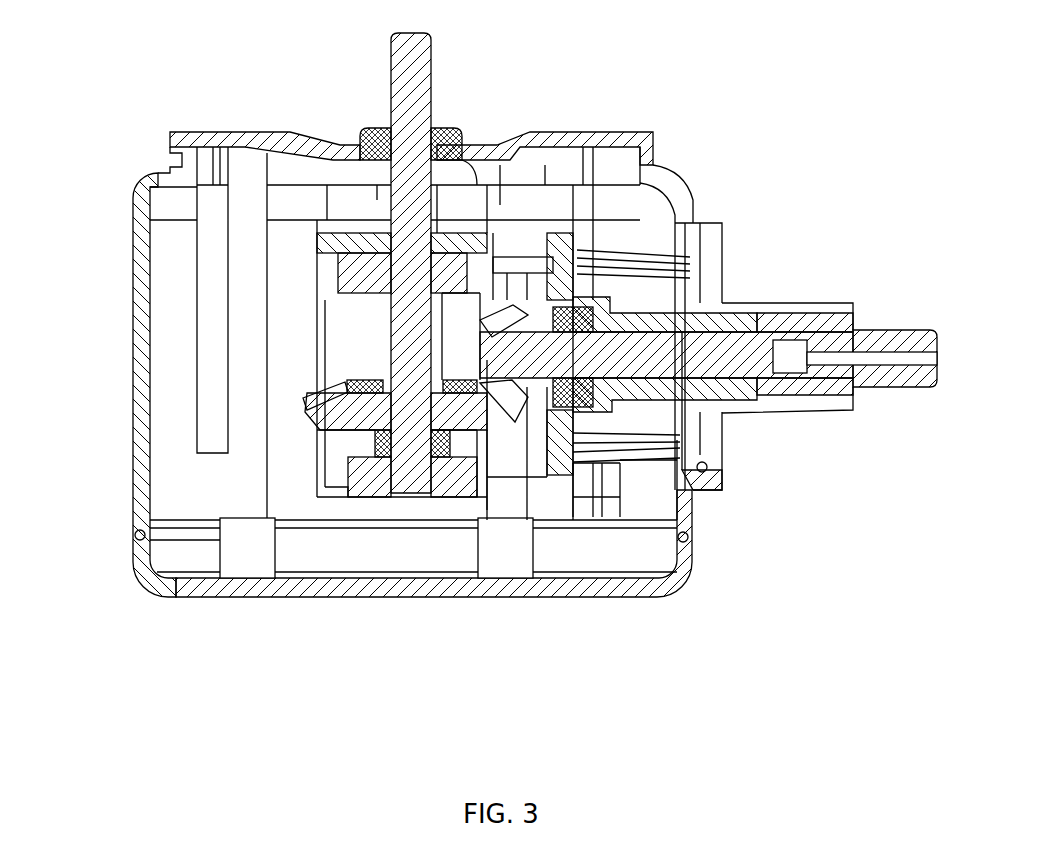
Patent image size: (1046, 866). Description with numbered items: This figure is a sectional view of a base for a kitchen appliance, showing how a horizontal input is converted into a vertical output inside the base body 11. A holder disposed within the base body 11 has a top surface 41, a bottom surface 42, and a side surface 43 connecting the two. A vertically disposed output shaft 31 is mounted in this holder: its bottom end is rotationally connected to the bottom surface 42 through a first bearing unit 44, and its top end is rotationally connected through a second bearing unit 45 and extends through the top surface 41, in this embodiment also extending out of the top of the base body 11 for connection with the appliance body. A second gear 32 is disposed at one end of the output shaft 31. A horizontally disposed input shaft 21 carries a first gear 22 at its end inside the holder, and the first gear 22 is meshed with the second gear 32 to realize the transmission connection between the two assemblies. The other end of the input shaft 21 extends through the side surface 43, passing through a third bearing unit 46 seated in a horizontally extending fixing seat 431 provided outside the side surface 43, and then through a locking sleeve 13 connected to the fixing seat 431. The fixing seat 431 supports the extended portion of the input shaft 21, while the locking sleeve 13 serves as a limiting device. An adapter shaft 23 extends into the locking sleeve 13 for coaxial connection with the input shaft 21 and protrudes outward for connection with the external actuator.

The base body 11 is at (140, 353).
The locking sleeve 13 is at (783, 317).
The input shaft 21 is at (645, 350).
The first gear 22 is at (508, 325).
The adapter shaft 23 is at (858, 335).
The output shaft 31 is at (420, 87).
The second gear 32 is at (333, 417).
The top surface 41 is at (330, 193).
The bottom surface 42 is at (375, 500).
The side surface 43 is at (560, 262).
The fixing seat 431 is at (627, 400).
The first bearing unit 44 is at (357, 477).
The second bearing unit 45 is at (355, 275).
The third bearing unit 46 is at (560, 328).